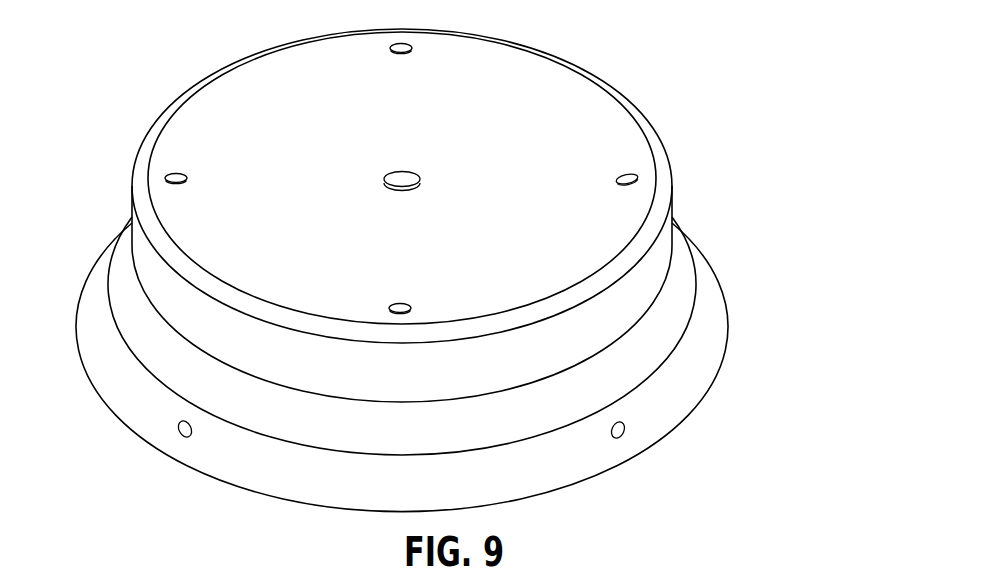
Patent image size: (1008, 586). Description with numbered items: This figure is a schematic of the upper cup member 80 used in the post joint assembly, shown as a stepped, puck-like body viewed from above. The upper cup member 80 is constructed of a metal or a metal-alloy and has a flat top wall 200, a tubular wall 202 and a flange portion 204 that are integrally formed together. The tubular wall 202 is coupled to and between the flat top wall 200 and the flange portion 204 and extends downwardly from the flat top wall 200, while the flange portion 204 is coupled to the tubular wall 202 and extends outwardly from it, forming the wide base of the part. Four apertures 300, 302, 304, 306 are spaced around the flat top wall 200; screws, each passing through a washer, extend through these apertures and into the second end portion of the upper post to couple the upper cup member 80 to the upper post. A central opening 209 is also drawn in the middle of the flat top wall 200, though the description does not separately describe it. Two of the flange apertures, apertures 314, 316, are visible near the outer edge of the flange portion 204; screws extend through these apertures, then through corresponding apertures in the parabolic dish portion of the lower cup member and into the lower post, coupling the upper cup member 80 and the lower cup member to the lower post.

The upper cup member 80 is at (460, 262).
The flat top wall 200 is at (507, 72).
The tubular wall 202 is at (655, 258).
The flange portion 204 is at (707, 292).
The central opening 209 is at (410, 167).
The aperture 300 is at (181, 171).
The aperture 302 is at (617, 175).
The aperture 304 is at (395, 56).
The aperture 306 is at (403, 300).
The aperture 314 is at (179, 437).
The aperture 316 is at (627, 432).